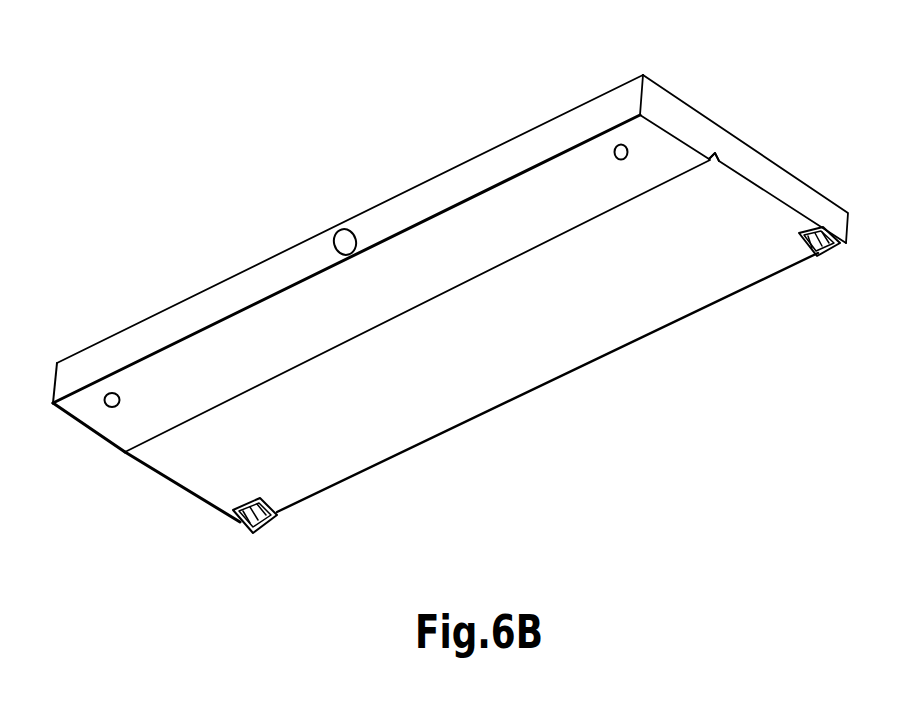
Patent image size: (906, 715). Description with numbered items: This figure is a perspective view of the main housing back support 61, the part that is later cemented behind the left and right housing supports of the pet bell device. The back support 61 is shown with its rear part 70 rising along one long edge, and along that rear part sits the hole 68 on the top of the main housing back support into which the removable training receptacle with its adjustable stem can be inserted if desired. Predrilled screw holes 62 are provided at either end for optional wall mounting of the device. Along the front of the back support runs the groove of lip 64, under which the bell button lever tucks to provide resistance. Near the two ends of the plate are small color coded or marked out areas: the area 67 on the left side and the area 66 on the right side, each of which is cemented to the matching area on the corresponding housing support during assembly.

The main housing back support 61 is at (465, 389).
The predrilled screw holes 62 is at (114, 394).
The groove of lip 64 is at (718, 160).
The color coded area on right side 66 is at (808, 250).
The color coded area on left side 67 is at (240, 523).
The hole for removable training receptacle 68 is at (343, 240).
The rear part of main housing back support 70 is at (245, 270).